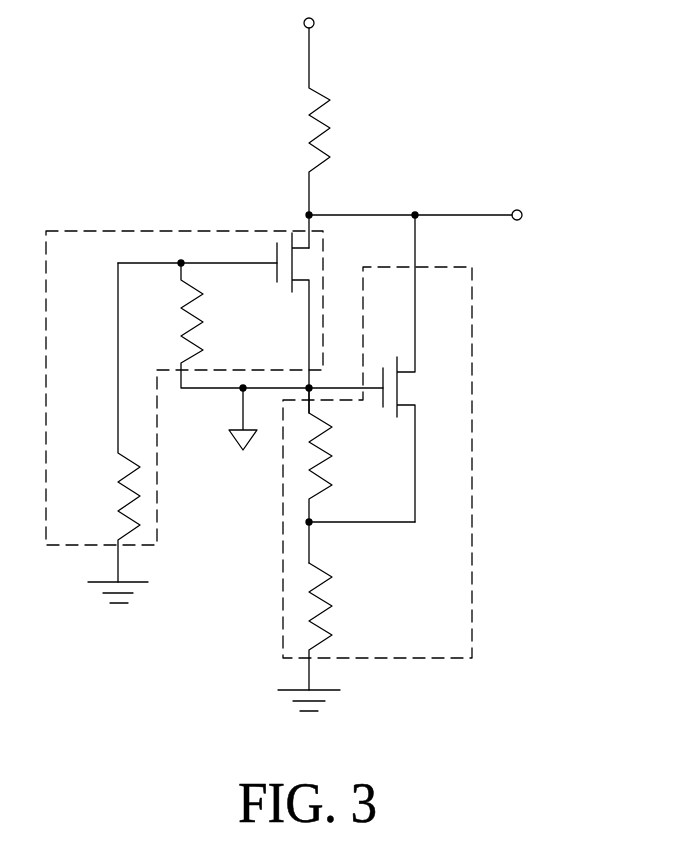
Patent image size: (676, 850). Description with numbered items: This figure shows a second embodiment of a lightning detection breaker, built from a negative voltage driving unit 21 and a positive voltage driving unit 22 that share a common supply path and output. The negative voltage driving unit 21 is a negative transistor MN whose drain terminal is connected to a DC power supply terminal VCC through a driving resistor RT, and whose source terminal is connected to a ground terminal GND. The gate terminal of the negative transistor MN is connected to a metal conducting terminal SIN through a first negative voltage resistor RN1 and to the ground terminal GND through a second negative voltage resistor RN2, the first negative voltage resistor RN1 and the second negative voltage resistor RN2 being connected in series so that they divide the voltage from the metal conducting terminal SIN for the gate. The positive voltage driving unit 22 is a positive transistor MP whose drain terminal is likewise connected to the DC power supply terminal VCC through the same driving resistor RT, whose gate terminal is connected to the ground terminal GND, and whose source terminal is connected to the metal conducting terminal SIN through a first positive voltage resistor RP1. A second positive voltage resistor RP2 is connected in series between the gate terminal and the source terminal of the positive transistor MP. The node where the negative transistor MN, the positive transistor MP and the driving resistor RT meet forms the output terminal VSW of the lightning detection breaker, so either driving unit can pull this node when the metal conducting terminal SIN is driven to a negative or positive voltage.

The negative voltage driving unit 21 is at (162, 231).
The positive voltage driving unit 22 is at (475, 485).
The driving resistor RT is at (339, 138).
The negative transistor MN is at (213, 323).
The first negative voltage resistor RN1 is at (102, 422).
The second negative voltage resistor RN2 is at (255, 324).
The positive transistor MP is at (424, 368).
The first positive voltage resistor RP1 is at (346, 626).
The second positive voltage resistor RP2 is at (340, 475).
The DC power supply terminal VCC is at (331, 14).
The output terminal VSW is at (442, 216).
The ground terminal GND is at (238, 436).
The metal conducting terminal SIN is at (133, 597).